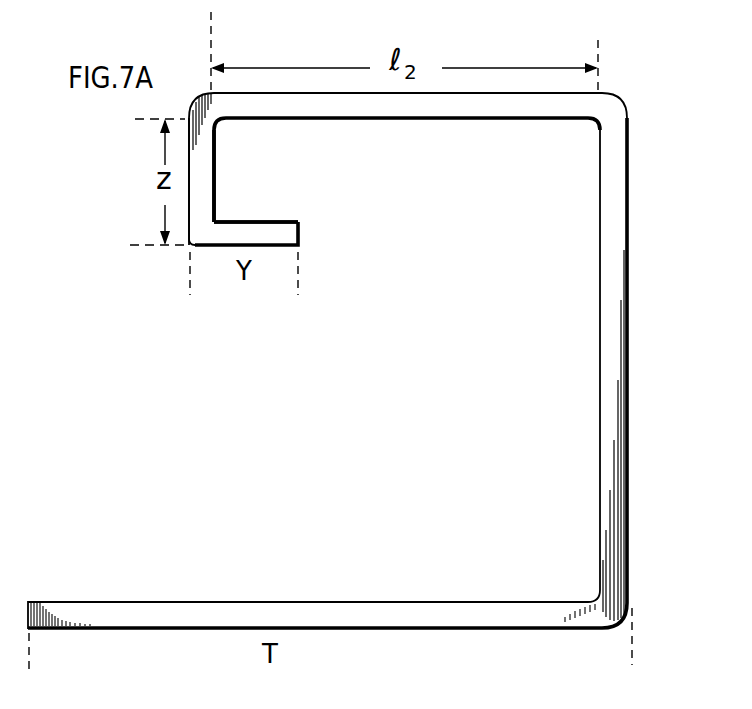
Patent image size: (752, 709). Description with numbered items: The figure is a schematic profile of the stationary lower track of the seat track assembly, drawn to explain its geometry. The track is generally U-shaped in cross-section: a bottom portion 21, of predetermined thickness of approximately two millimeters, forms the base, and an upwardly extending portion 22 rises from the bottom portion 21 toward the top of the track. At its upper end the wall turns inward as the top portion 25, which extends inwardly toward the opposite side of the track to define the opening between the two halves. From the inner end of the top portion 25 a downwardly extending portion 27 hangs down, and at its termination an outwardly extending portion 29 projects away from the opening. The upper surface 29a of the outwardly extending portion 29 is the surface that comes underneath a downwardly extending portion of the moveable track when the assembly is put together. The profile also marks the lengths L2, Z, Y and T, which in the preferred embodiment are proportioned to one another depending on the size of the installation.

The bottom portion 21 is at (162, 612).
The upwardly extending portion 22 is at (622, 317).
The top portion 25 is at (458, 105).
The downwardly extending portion 27 is at (203, 181).
The outwardly extending portion 29 is at (283, 237).
The upper surface 29a is at (268, 219).